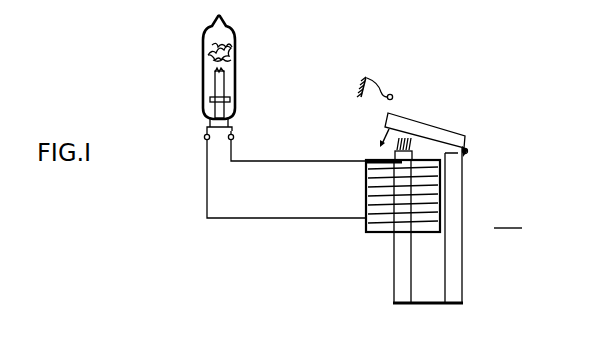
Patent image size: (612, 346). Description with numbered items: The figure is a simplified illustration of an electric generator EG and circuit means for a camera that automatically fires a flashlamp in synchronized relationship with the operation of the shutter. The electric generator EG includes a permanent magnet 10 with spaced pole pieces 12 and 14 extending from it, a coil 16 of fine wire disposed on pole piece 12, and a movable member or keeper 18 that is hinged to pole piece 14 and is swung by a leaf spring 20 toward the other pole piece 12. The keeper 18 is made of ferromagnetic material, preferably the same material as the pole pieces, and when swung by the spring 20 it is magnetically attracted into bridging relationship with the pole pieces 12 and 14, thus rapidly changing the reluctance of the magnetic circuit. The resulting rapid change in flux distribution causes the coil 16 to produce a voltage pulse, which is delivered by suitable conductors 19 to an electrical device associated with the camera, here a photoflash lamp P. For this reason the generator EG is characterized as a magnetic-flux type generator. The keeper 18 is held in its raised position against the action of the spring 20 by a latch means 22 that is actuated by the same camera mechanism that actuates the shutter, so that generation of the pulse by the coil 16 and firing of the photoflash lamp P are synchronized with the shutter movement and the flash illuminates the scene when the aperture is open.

The photoflash lamp P is at (203, 72).
The conductors 19 is at (288, 162).
The latch means 22 is at (375, 87).
The keeper 18 is at (432, 130).
The leaf spring 20 is at (469, 153).
The electric generator EG is at (428, 241).
The coil 16 is at (376, 220).
The pole piece 12 is at (394, 273).
The pole piece 14 is at (462, 273).
The permanent magnet 10 is at (431, 296).